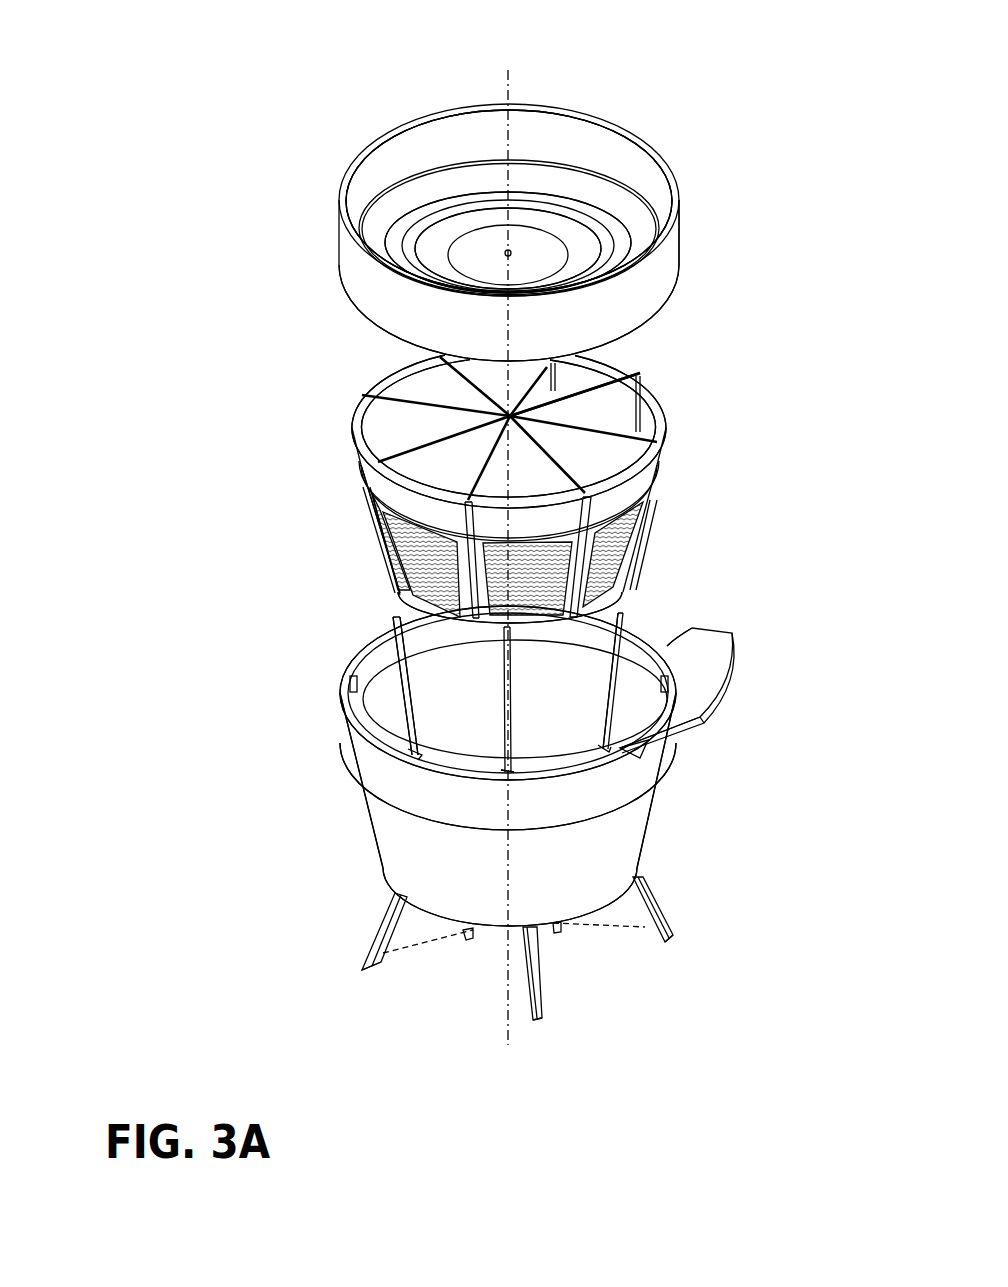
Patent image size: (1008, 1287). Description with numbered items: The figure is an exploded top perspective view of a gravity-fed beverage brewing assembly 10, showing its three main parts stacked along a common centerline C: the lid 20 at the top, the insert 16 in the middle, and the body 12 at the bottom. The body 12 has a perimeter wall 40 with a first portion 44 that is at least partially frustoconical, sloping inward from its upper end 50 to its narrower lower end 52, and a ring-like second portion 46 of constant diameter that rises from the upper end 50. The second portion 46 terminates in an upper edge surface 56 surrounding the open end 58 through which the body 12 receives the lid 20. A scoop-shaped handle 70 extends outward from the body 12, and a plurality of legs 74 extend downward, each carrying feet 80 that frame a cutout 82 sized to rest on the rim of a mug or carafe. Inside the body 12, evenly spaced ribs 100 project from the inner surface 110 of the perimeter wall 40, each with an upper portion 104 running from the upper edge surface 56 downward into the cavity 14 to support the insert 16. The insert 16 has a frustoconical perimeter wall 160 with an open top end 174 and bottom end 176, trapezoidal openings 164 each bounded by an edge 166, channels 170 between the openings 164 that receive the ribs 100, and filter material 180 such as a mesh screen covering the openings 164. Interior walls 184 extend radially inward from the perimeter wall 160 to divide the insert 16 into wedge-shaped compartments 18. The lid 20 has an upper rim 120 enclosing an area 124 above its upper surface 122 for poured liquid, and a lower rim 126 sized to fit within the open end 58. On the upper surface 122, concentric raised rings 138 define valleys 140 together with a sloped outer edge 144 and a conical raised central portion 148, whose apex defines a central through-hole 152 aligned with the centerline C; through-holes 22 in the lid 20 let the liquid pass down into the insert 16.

The beverage brewing assembly 10 is at (270, 98).
The body 12 is at (393, 842).
The cavity 14 is at (357, 708).
The insert 16 is at (658, 418).
The compartments 18 is at (430, 452).
The lid 20 is at (338, 258).
The through-holes 22 is at (563, 235).
The centerline C is at (510, 84).
The perimeter wall 40 is at (635, 815).
The first portion 44 is at (603, 848).
The second portion 46 is at (660, 750).
The upper end 50 is at (658, 783).
The lower end 52 is at (640, 877).
The upper edge surface 56 is at (393, 722).
The open end 58 is at (598, 625).
The handle 70 is at (690, 690).
The legs 74 is at (622, 908).
The feet 80 is at (558, 927).
The cutout 82 is at (620, 932).
The ribs 100 is at (642, 660).
The upper portion 104 is at (695, 625).
The inner surface 110 is at (439, 685).
The upper rim 120 is at (657, 268).
The upper surface 122 is at (643, 221).
The area 124 is at (657, 202).
The lower rim 126 is at (597, 352).
The raised rings 138 is at (500, 236).
The valleys 140 is at (453, 233).
The sloped outer edge 144 is at (373, 218).
The raised central portion 148 is at (552, 286).
The central through-hole 152 is at (506, 249).
The perimeter wall 160 is at (633, 490).
The openings 164 is at (380, 540).
The edge 166 is at (373, 522).
The channels 170 is at (667, 452).
The top end 174 is at (383, 370).
The bottom end 176 is at (397, 603).
The filter material 180 is at (417, 563).
The interior walls 184 is at (650, 390).